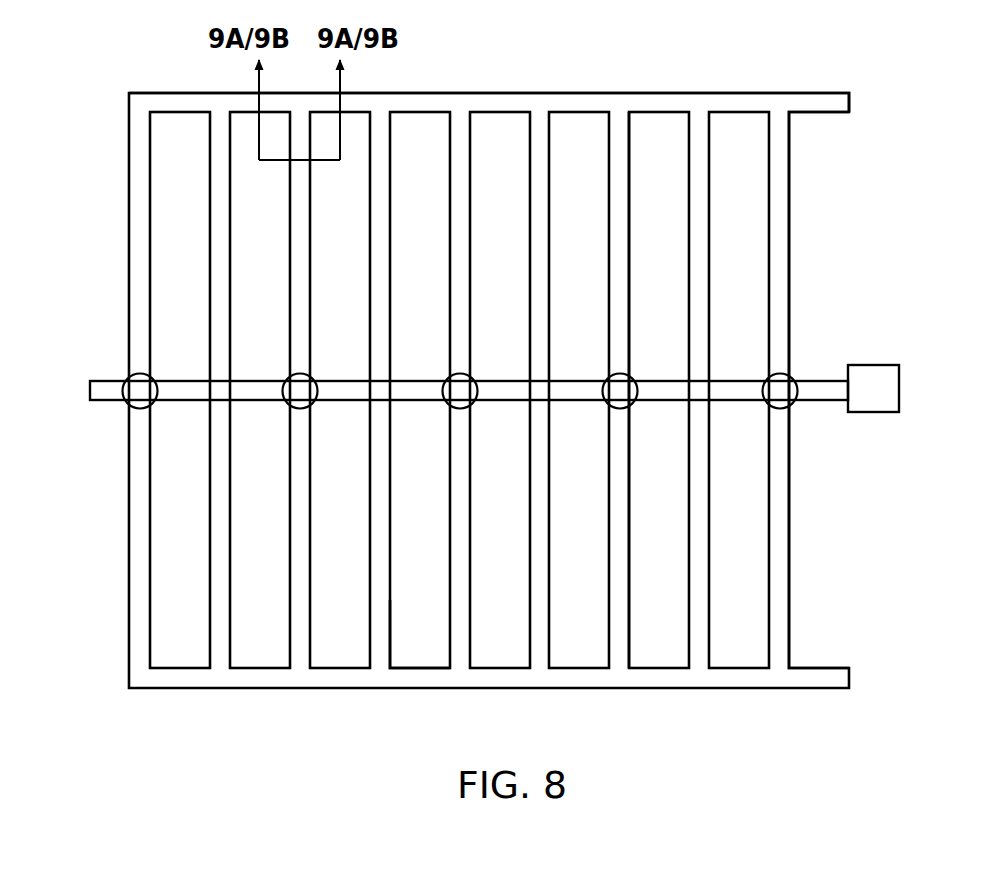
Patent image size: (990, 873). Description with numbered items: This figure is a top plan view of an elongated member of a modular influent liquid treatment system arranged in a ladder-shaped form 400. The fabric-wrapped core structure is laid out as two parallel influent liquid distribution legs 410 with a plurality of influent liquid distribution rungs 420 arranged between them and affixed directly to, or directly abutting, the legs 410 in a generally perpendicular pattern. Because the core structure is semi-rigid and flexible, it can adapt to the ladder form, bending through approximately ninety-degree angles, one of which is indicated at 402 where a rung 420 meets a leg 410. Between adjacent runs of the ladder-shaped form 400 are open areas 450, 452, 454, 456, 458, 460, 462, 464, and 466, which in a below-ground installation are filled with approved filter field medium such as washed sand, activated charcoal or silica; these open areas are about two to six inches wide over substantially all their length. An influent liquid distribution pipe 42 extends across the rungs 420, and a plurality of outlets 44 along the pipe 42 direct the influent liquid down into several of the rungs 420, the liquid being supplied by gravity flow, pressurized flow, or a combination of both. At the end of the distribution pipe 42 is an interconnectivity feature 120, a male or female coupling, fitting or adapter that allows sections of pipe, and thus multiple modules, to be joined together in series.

The ladder-shaped form 400 is at (297, 692).
The influent liquid distribution legs 410 is at (474, 90).
The influent liquid distribution rungs 420 is at (632, 183).
The ninety-degree angle 402 is at (393, 663).
The open area 450 is at (180, 390).
The open area 452 is at (260, 390).
The open area 454 is at (340, 390).
The open area 456 is at (420, 390).
The open area 458 is at (500, 390).
The open area 460 is at (579, 390).
The open area 462 is at (659, 390).
The open area 464 is at (739, 390).
The open area 466 is at (819, 390).
The influent liquid distribution pipe 42 is at (821, 403).
The outlets 44 is at (128, 378).
The interconnectivity feature 120 is at (878, 360).